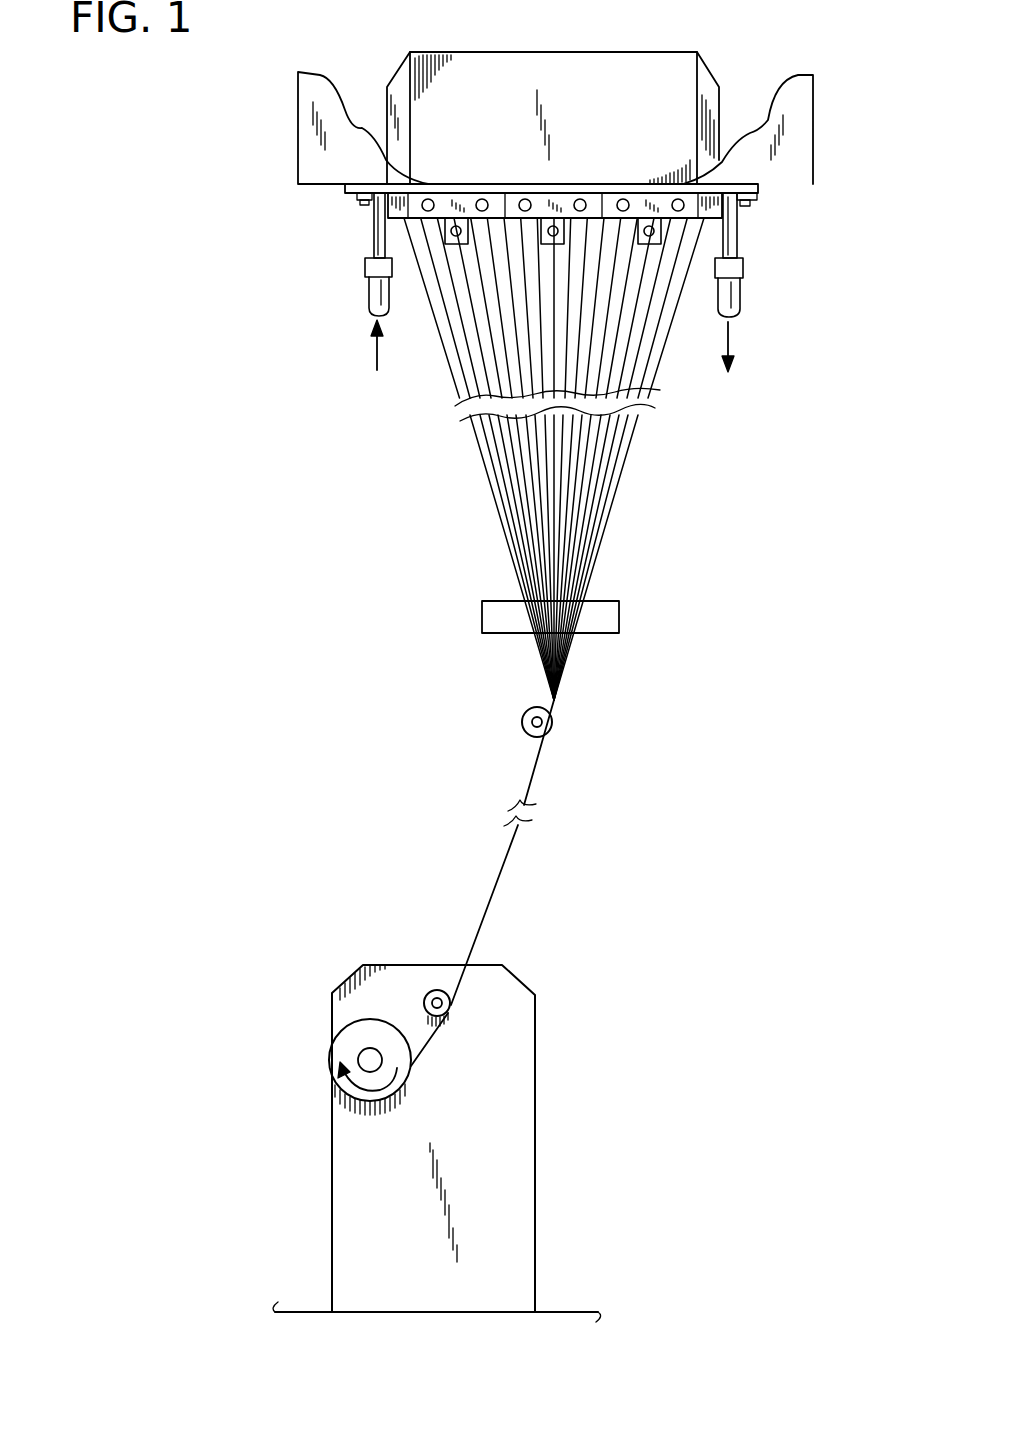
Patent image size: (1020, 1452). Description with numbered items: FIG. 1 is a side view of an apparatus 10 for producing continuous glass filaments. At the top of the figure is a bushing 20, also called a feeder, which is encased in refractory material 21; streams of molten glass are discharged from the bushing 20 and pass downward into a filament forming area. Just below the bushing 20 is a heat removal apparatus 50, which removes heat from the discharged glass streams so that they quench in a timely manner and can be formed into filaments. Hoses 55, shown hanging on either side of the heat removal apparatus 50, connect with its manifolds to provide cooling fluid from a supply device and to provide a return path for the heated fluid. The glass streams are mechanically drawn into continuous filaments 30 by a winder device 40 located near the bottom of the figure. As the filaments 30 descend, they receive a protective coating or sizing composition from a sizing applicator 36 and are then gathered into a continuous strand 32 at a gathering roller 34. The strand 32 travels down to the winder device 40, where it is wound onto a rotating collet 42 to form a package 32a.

The apparatus 10 is at (291, 112).
The bushing 20 is at (613, 70).
The refractory material 21 is at (802, 130).
The heat removal apparatus 50 is at (355, 222).
The hoses 55 is at (375, 293).
The continuous filaments 30 is at (600, 487).
The sizing applicator 36 is at (608, 613).
The gathering roller 34 is at (521, 722).
The continuous strand 32 is at (494, 884).
The winder device 40 is at (512, 1023).
The rotating collet 42 is at (370, 1056).
The package 32a is at (340, 1055).